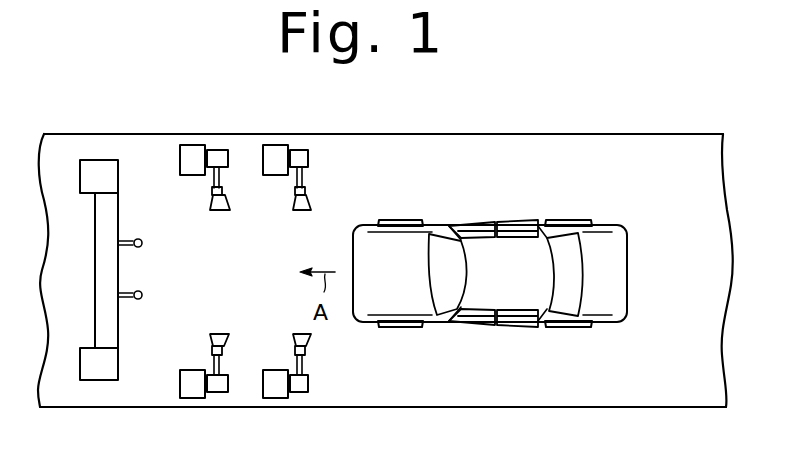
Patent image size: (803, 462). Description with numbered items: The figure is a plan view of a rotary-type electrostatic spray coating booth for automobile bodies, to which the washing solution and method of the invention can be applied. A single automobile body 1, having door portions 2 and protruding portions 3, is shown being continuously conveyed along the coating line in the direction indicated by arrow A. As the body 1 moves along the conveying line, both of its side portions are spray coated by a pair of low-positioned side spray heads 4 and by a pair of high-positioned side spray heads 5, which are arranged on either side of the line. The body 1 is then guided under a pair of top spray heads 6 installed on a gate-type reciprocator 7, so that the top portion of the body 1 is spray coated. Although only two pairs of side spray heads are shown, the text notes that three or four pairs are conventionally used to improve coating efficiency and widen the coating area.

The automobile body 1 is at (628, 270).
The door portions 2 is at (480, 220).
The protruding portions 3 is at (400, 219).
The low-positioned side spray heads 4 is at (298, 150).
The high-positioned side spray heads 5 is at (216, 150).
The top spray heads 6 is at (143, 243).
The gate-type reciprocator 7 is at (100, 380).